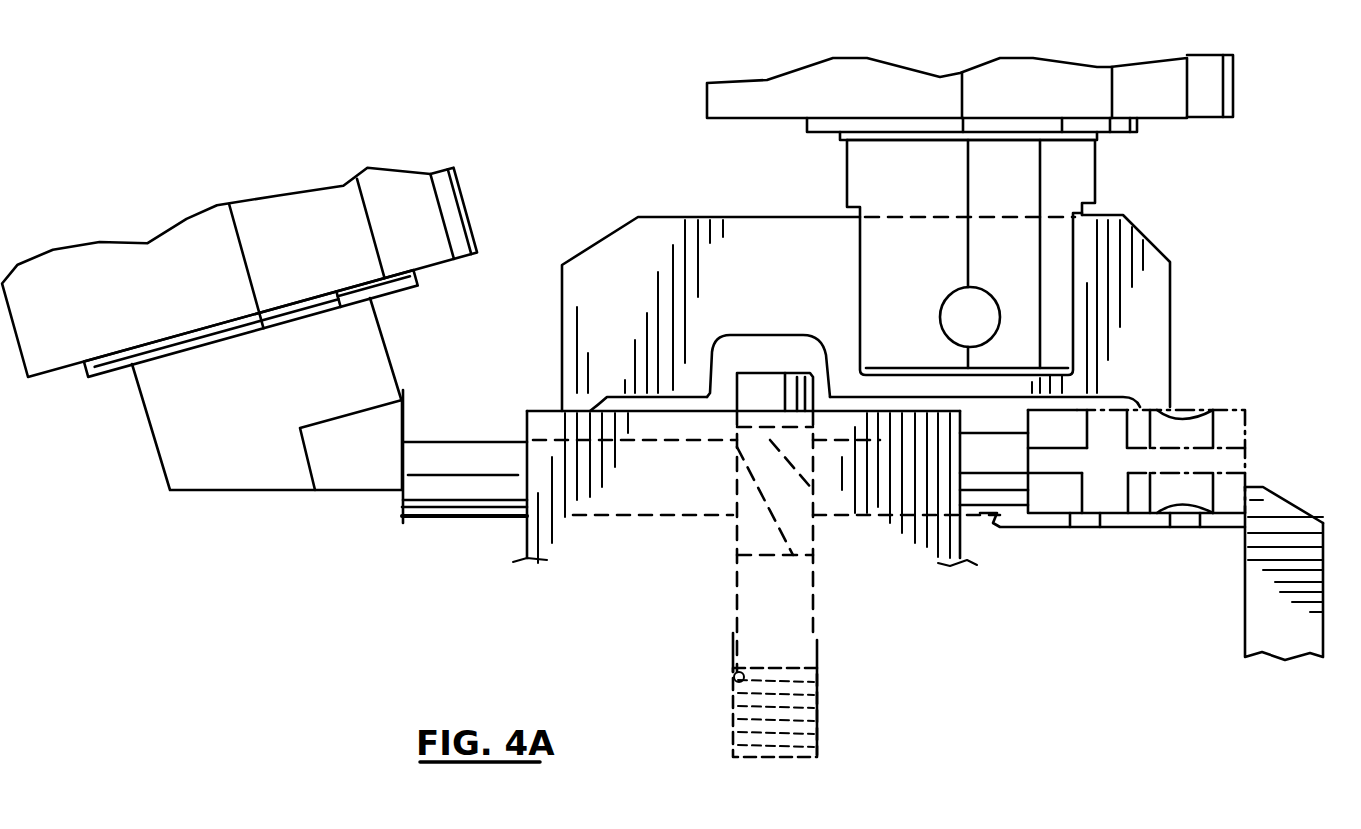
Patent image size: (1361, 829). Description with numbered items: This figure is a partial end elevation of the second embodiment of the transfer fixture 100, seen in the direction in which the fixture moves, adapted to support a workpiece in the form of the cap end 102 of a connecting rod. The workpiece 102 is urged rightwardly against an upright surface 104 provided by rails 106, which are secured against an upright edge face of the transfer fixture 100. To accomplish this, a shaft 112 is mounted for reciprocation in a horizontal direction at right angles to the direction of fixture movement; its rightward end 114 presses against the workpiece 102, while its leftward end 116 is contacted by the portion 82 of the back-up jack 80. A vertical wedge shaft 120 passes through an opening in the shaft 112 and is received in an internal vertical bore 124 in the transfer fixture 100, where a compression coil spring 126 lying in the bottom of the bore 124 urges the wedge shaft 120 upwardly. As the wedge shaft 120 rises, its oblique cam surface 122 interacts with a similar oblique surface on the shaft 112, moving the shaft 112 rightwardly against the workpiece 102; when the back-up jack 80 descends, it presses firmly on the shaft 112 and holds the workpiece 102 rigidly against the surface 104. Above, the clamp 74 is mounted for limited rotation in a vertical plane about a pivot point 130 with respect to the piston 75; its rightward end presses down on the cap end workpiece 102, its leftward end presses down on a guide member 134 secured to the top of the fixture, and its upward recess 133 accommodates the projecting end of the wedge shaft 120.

The clamp 74 is at (1160, 326).
The piston 75 is at (858, 172).
The back-up jack 80 is at (240, 473).
The portion of back-up jack 82 is at (355, 463).
The transfer fixture 100 is at (1197, 569).
The cap end workpiece 102 is at (1237, 425).
The upright surface 104 is at (1247, 560).
The rails 106 is at (1298, 527).
The shaft 112 is at (482, 497).
The rightward end 114 is at (1030, 490).
The leftward end 116 is at (400, 504).
The wedge shaft 120 is at (824, 367).
The oblique cam surface 122 is at (795, 487).
The vertical bore 124 is at (818, 612).
The compression coil spring 126 is at (819, 690).
The pivot point 130 is at (945, 322).
The upward recess 133 is at (750, 343).
The guide member 134 is at (542, 417).